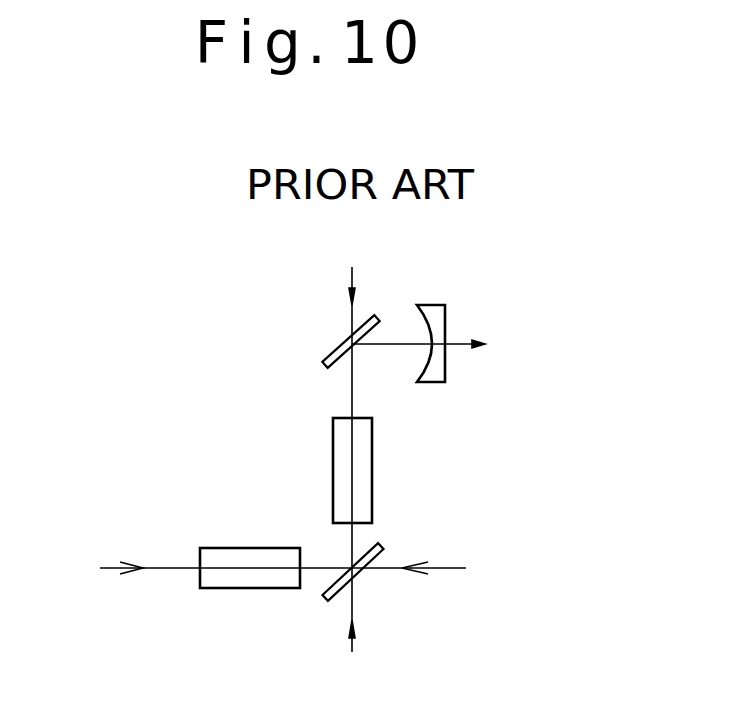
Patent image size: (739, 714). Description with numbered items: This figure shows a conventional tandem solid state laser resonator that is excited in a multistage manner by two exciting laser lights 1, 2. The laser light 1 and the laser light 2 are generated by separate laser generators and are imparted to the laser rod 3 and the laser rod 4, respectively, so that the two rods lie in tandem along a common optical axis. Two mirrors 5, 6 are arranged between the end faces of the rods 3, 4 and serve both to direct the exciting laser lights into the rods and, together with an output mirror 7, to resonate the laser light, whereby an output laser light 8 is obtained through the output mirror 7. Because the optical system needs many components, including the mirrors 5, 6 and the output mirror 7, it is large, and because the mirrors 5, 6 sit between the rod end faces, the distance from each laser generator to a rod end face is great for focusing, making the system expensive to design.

The laser light 1 is at (352, 268).
The laser light 2 is at (105, 567).
The laser rod 3 is at (333, 452).
The laser rod 4 is at (233, 548).
The mirror 5 is at (330, 356).
The mirror 6 is at (328, 600).
The output mirror 7 is at (446, 310).
The output laser light 8 is at (460, 342).